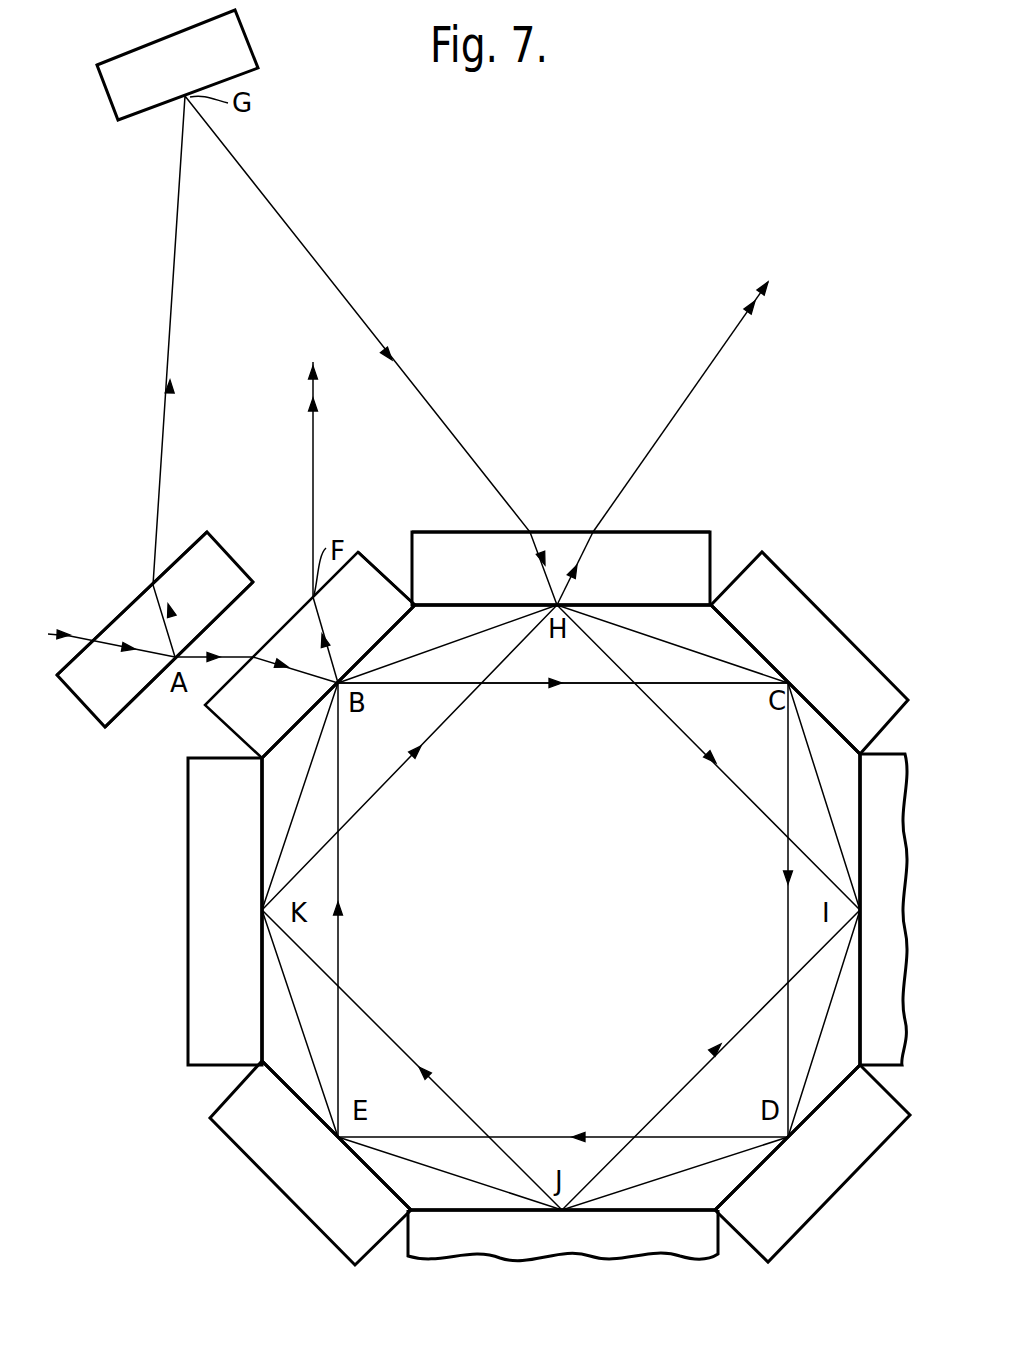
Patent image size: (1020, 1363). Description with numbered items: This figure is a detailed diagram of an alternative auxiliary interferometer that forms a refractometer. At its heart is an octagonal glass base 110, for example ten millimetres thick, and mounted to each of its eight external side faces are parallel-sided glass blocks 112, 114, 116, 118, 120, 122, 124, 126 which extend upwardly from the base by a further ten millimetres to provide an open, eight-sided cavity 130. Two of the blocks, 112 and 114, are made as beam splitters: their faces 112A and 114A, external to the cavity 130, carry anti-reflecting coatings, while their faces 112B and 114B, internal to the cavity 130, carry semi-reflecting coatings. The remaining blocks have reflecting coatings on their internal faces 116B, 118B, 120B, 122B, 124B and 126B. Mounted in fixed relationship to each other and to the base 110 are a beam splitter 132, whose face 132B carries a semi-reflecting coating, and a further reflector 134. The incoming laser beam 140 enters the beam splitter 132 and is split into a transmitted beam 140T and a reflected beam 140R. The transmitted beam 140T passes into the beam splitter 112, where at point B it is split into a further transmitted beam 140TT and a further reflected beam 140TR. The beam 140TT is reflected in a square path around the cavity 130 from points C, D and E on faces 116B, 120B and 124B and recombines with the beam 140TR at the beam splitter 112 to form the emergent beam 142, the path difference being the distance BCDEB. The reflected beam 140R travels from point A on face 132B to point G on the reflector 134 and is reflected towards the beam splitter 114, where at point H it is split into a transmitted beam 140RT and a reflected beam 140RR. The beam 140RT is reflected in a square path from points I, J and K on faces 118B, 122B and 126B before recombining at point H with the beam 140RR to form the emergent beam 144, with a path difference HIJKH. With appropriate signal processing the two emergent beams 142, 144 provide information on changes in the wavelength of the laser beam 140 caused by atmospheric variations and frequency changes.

The octagonal glass base 110 is at (566, 924).
The beam splitter glass block 112 is at (373, 626).
The anti-reflecting coated face 112A is at (362, 545).
The semi-reflecting coated face 112B is at (378, 663).
The beam splitter glass block 114 is at (484, 581).
The anti-reflecting coated face 114A is at (572, 531).
The semi-reflecting coated face 114B is at (645, 606).
The glass block 116 is at (814, 661).
The reflecting coated face 116B is at (849, 739).
The glass block 118 is at (901, 888).
The reflecting coated face 118B is at (851, 998).
The glass block 120 is at (826, 1184).
The reflecting coated face 120B is at (769, 1163).
The glass block 122 is at (576, 1246).
The reflecting coated face 122B is at (640, 1208).
The glass block 124 is at (316, 1184).
The reflecting coated face 124B is at (377, 1179).
The glass block 126 is at (244, 884).
The reflecting coated face 126B is at (265, 1010).
The eight-sided cavity 130 is at (314, 804).
The beam splitter 132 is at (211, 604).
The semi-reflecting coated face 132B is at (218, 552).
The reflector 134 is at (183, 88).
The incoming laser beam 140 is at (52, 634).
The reflected beam 140R is at (170, 311).
The transmitted beam 140T is at (196, 672).
The further reflected beam 140TR is at (318, 617).
The further transmitted beam 140TT is at (512, 684).
The transmitted beam 140RT is at (630, 673).
The reflected beam 140RR is at (588, 553).
The emergent beam 142 is at (315, 460).
The emergent beam 144 is at (690, 403).